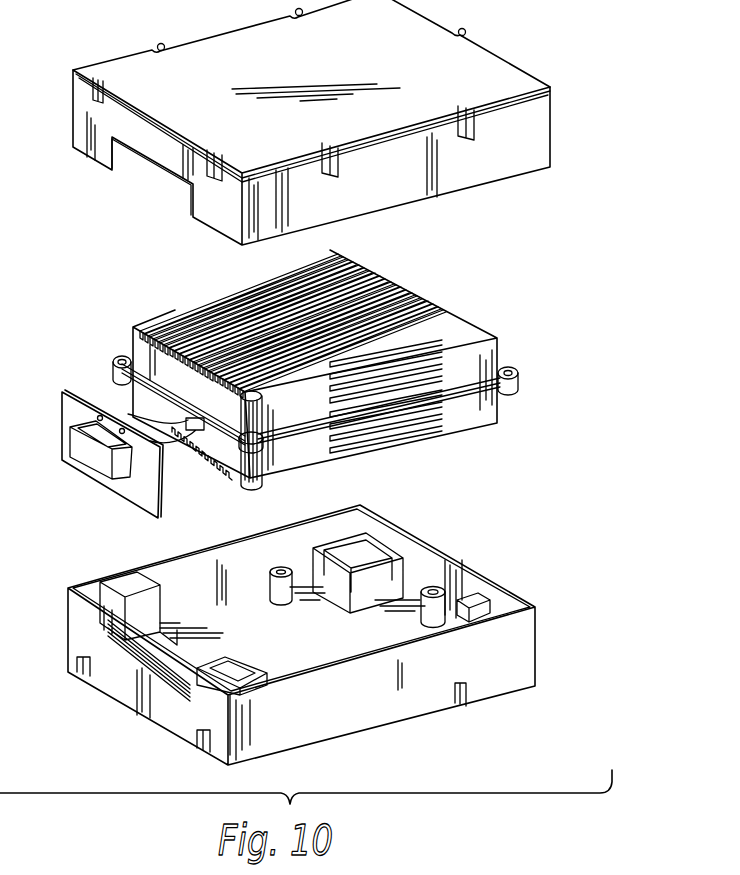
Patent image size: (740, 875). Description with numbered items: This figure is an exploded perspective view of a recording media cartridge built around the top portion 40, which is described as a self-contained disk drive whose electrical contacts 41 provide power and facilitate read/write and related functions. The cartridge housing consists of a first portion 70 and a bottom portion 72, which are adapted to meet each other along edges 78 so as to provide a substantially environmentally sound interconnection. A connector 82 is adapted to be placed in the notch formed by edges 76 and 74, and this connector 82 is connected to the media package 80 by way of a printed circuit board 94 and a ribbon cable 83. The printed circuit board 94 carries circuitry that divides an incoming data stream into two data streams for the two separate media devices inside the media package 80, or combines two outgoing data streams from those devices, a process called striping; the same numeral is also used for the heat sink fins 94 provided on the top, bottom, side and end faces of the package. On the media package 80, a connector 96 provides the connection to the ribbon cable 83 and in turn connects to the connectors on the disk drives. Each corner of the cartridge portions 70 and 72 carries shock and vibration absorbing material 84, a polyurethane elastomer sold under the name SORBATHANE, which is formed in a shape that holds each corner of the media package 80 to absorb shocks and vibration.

The top portion 40 is at (575, 84).
The first portion 70 is at (553, 118).
The bottom portion 72 is at (343, 630).
The edge 74 is at (137, 662).
The edge 76 is at (160, 168).
The edges 78 is at (233, 540).
The media package 80 is at (354, 370).
The connector 82 is at (62, 400).
The ribbon cable 83 is at (140, 422).
The shock and vibration absorbing material 84 is at (378, 540).
The printed circuit board 94 is at (458, 297).
The connector 96 is at (197, 427).
The electrical contact 41 is at (123, 477).